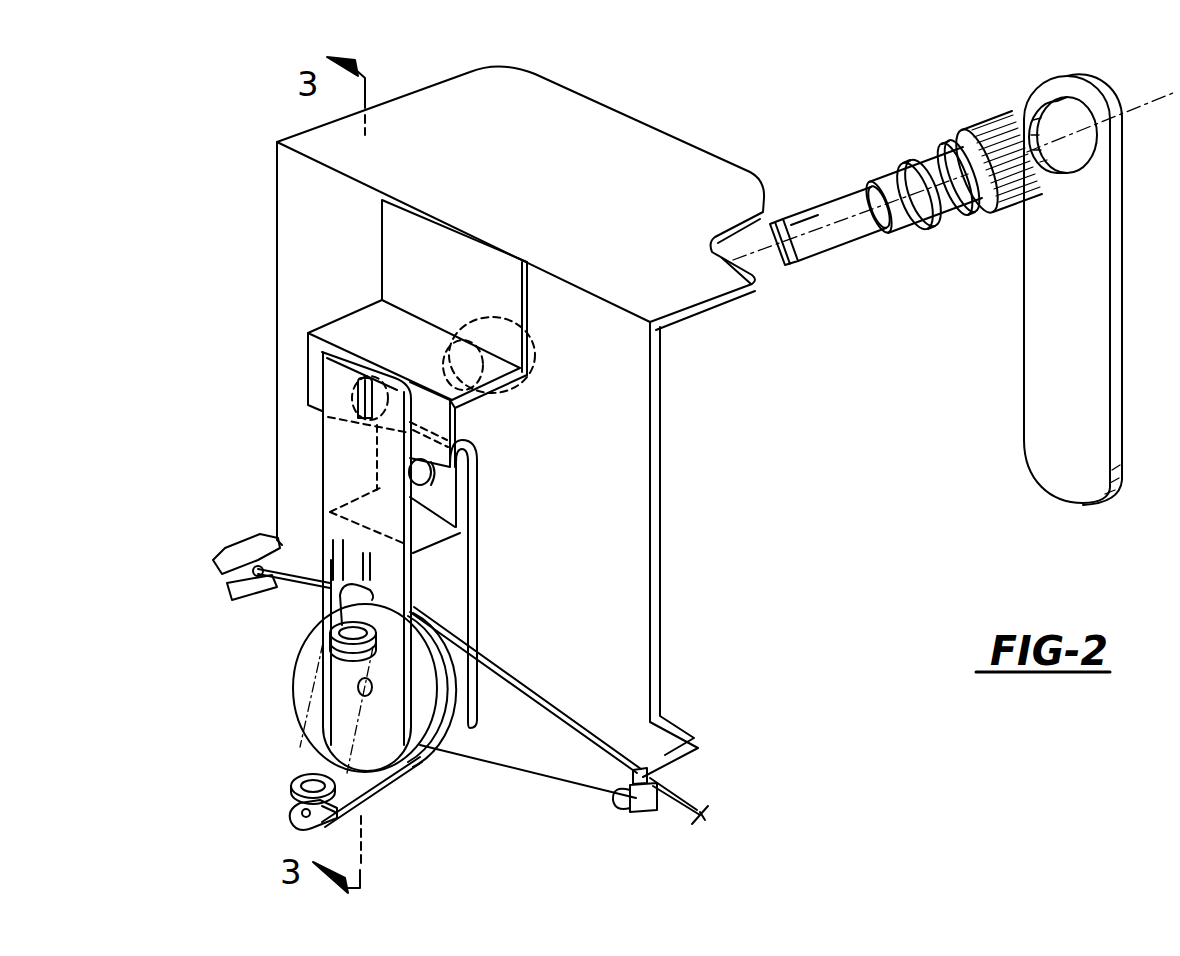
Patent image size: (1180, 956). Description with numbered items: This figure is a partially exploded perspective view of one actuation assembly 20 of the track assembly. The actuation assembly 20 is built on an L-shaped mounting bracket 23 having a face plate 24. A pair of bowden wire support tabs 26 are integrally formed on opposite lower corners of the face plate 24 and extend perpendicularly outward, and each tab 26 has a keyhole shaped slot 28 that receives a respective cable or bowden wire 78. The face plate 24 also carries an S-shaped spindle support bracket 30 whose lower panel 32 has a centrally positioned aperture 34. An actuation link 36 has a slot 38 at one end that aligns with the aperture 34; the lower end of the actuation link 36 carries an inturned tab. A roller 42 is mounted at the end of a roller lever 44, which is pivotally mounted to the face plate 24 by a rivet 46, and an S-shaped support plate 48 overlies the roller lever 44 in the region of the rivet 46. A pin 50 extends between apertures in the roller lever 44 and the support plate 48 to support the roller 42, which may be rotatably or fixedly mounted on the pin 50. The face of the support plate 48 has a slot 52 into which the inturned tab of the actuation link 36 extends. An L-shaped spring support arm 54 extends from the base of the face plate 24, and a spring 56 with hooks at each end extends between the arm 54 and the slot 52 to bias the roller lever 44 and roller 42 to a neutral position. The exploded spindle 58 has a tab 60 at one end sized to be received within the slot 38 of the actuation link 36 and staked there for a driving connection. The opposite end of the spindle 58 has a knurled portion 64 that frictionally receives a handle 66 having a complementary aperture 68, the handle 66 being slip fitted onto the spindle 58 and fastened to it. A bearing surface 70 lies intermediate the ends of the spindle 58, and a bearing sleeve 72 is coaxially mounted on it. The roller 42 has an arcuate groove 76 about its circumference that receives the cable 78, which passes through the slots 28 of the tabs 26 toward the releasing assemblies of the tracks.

The actuation assembly 20 is at (745, 478).
The mounting bracket 23 is at (601, 130).
The face plate 24 is at (298, 203).
The bowden wire support tabs 26 is at (215, 560).
The keyhole shaped slot 28 is at (245, 558).
The spindle support bracket 30 is at (487, 270).
The lower panel 32 is at (445, 418).
The aperture 34 is at (387, 388).
The actuation link 36 is at (333, 447).
The slot 38 is at (355, 395).
The roller 42 is at (420, 745).
The roller lever 44 is at (478, 578).
The rivet 46 is at (420, 480).
The support plate 48 is at (450, 500).
The pin 50 is at (330, 693).
The slot 52 is at (330, 572).
The spring support arm 54 is at (287, 808).
The spring 56 is at (292, 785).
The spindle 58 is at (866, 258).
The tab 60 is at (792, 258).
The knurled portion 64 is at (980, 130).
The handle 66 is at (1040, 383).
The aperture 68 is at (1048, 118).
The bearing surface 70 is at (883, 190).
The bearing sleeve 72 is at (947, 228).
The arcuate groove 76 is at (452, 697).
The cable 78 is at (580, 740).